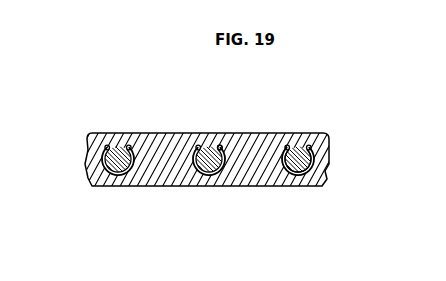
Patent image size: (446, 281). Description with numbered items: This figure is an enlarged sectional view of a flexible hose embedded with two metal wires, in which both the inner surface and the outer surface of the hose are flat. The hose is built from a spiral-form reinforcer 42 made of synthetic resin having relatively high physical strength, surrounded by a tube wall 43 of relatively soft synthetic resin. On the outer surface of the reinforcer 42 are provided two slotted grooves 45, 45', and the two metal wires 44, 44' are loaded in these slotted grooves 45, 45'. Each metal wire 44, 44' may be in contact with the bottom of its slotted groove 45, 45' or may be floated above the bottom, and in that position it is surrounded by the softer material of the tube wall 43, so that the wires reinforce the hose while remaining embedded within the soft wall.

The reinforcer 42 is at (95, 133).
The tube wall 43 is at (161, 133).
The metal wire 44 is at (208, 130).
The metal wire 44' is at (237, 117).
The slotted groove 45 is at (295, 189).
The slotted groove 45' is at (308, 191).